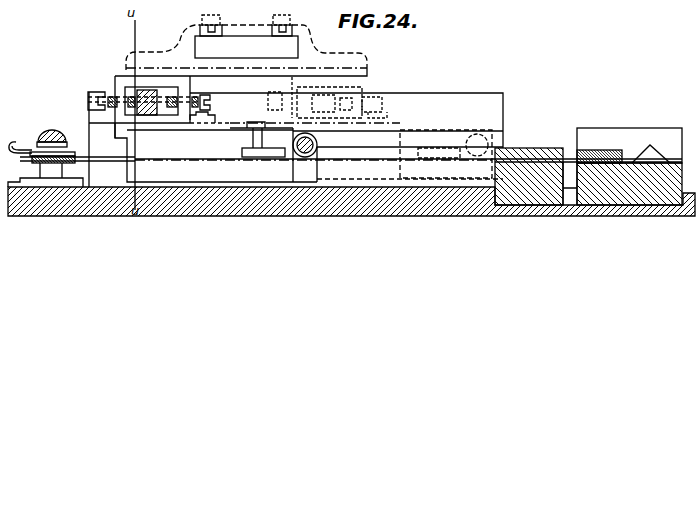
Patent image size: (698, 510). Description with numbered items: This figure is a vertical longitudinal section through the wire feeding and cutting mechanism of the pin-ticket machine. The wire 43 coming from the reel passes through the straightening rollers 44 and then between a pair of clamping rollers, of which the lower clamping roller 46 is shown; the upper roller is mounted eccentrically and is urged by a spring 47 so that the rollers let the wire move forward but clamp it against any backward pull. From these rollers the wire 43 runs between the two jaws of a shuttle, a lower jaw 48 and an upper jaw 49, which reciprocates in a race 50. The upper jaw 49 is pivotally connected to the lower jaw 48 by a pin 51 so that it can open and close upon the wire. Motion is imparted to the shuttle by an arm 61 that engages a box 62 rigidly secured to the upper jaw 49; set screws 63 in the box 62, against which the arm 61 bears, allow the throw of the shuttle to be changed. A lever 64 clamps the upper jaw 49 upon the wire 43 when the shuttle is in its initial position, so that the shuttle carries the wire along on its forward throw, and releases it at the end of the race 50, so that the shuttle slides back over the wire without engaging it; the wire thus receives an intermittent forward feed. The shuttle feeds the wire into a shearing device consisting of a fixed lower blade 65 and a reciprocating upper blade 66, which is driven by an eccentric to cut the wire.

The wire 43 is at (560, 150).
The straightening rollers 44 is at (274, 152).
The clamping roller 46 is at (48, 132).
The spring 47 is at (24, 149).
The lower jaw 48 is at (203, 139).
The upper jaw 49 is at (210, 140).
The race 50 is at (426, 191).
The pin 51 is at (318, 143).
The arm 61 is at (137, 92).
The box 62 is at (159, 107).
The set screws 63 is at (89, 98).
The lever 64 is at (241, 45).
The lower blade 65 is at (614, 178).
The upper blade 66 is at (651, 144).